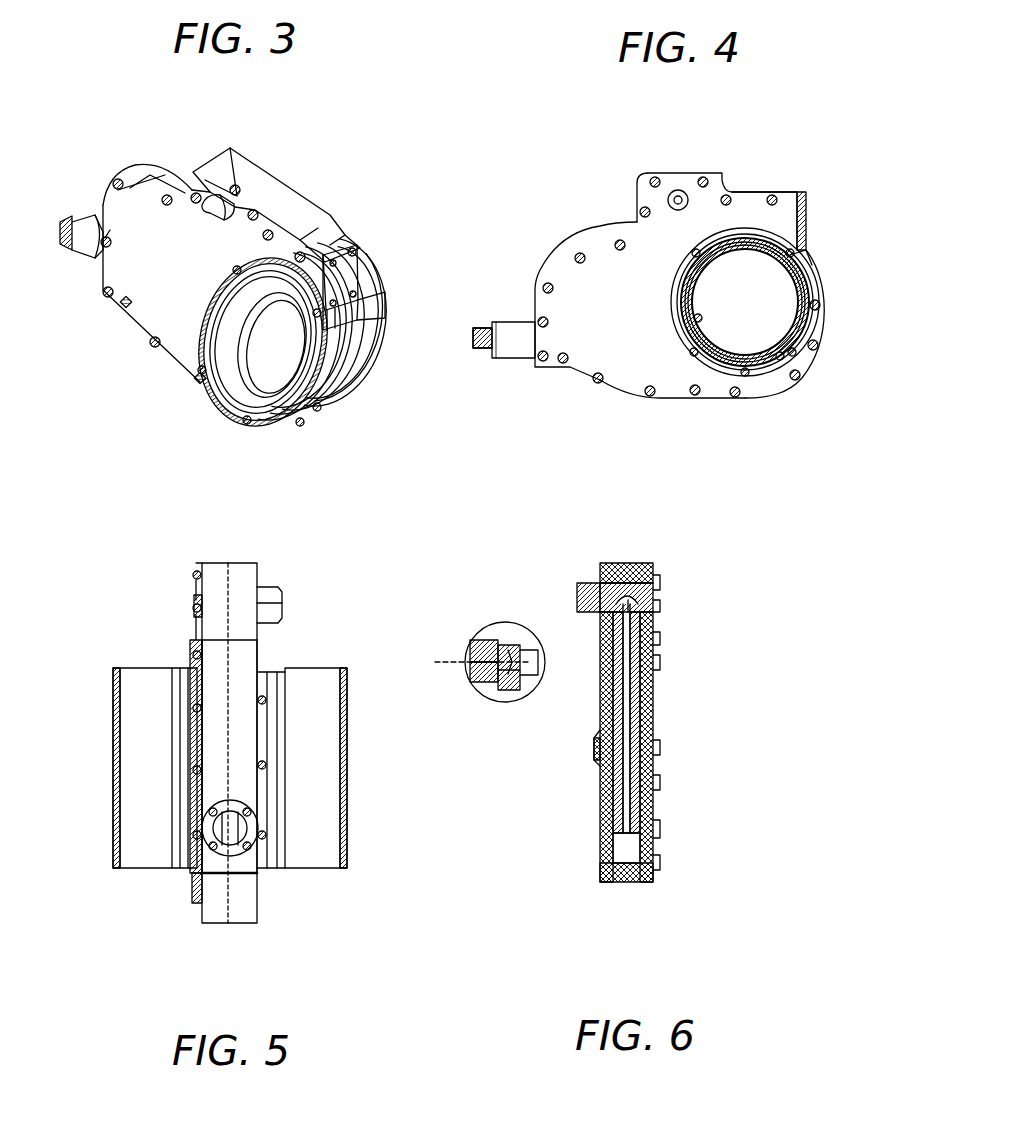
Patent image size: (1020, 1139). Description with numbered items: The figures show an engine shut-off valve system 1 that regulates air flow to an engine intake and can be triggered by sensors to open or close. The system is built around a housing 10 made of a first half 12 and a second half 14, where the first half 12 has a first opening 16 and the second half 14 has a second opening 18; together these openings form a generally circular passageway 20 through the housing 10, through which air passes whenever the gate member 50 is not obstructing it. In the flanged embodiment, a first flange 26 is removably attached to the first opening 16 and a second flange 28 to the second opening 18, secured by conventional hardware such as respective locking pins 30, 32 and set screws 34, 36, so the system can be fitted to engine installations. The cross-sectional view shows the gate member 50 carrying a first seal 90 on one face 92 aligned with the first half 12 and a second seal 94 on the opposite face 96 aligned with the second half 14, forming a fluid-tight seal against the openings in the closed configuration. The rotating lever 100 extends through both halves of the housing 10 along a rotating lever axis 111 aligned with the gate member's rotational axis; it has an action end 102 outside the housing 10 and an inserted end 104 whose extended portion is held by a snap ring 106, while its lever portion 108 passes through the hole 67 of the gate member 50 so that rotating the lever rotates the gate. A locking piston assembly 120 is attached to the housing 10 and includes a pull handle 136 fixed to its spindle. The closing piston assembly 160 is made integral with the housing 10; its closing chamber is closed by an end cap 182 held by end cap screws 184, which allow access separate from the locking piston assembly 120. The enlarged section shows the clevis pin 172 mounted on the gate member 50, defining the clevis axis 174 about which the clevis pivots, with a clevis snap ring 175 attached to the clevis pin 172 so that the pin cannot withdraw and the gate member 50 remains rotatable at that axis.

In FIG. 3, the engine shut-off valve system 1 is at (124, 113).
In FIG. 4, the engine shut-off valve system 1 is at (612, 131).
In FIG. 5, the engine shut-off valve system 1 is at (150, 563).
In FIG. 6, the engine shut-off valve system 1 is at (762, 597).
In FIG. 3, the housing 10 is at (142, 314).
In FIG. 4, the housing 10 is at (690, 174).
In FIG. 5, the housing 10 is at (222, 568).
In FIG. 6, the housing 10 is at (604, 846).
In FIG. 3, the first half 12 is at (150, 178).
In FIG. 5, the first half 12 is at (248, 910).
In FIG. 6, the first half 12 is at (606, 885).
In FIG. 3, the second half 14 is at (176, 170).
In FIG. 5, the second half 14 is at (213, 921).
In FIG. 6, the second half 14 is at (646, 885).
In FIG. 3, the first opening 16 is at (278, 398).
In FIG. 3, the second opening 18 is at (386, 320).
In FIG. 3, the passageway 20 is at (236, 372).
In FIG. 4, the passageway 20 is at (738, 305).
In FIG. 5, the passageway 20 is at (142, 777).
In FIG. 4, the first flange 26 is at (683, 323).
In FIG. 5, the first flange 26 is at (334, 716).
In FIG. 5, the second flange 28 is at (132, 733).
In FIG. 4, the locking pin 30 is at (798, 252).
In FIG. 5, the locking pin 32 is at (196, 678).
In FIG. 4, the set screw 34 is at (784, 352).
In FIG. 5, the set screw 36 is at (196, 770).
In FIG. 6, the gate member 50 is at (630, 805).
In FIG. 6, the hole 67 is at (630, 600).
In FIG. 6, the first seal 90 is at (625, 718).
In FIG. 6, the face 92 is at (620, 760).
In FIG. 6, the second seal 94 is at (640, 718).
In FIG. 6, the opposite face 96 is at (642, 776).
In FIG. 3, the rotating lever 100 is at (220, 200).
In FIG. 4, the rotating lever 100 is at (672, 200).
In FIG. 5, the rotating lever 100 is at (270, 590).
In FIG. 6, the rotating lever 100 is at (652, 596).
In FIG. 3, the action end 102 is at (218, 216).
In FIG. 4, the action end 102 is at (676, 208).
In FIG. 5, the action end 102 is at (276, 611).
In FIG. 6, the action end 102 is at (586, 590).
In FIG. 6, the inserted end 104 is at (616, 598).
In FIG. 6, the snap ring 106 is at (636, 596).
In FIG. 6, the lever portion 108 is at (636, 606).
In FIG. 6, the rotating lever axis 111 is at (680, 600).
In FIG. 3, the locking piston assembly 120 is at (84, 284).
In FIG. 4, the locking piston assembly 120 is at (522, 353).
In FIG. 5, the locking piston assembly 120 is at (252, 830).
In FIG. 5, the pull handle 136 is at (205, 880).
In FIG. 3, the closing piston assembly 160 is at (352, 273).
In FIG. 4, the closing piston assembly 160 is at (758, 200).
In FIG. 5, the closing piston assembly 160 is at (210, 603).
In FIG. 6, the clevis pin 172 is at (520, 662).
In FIG. 6, the clevis axis 174 is at (468, 662).
In FIG. 6, the clevis snap ring 175 is at (522, 674).
In FIG. 3, the end cap 182 is at (355, 252).
In FIG. 4, the end cap 182 is at (806, 196).
In FIG. 3, the end cap screws 184 is at (360, 256).